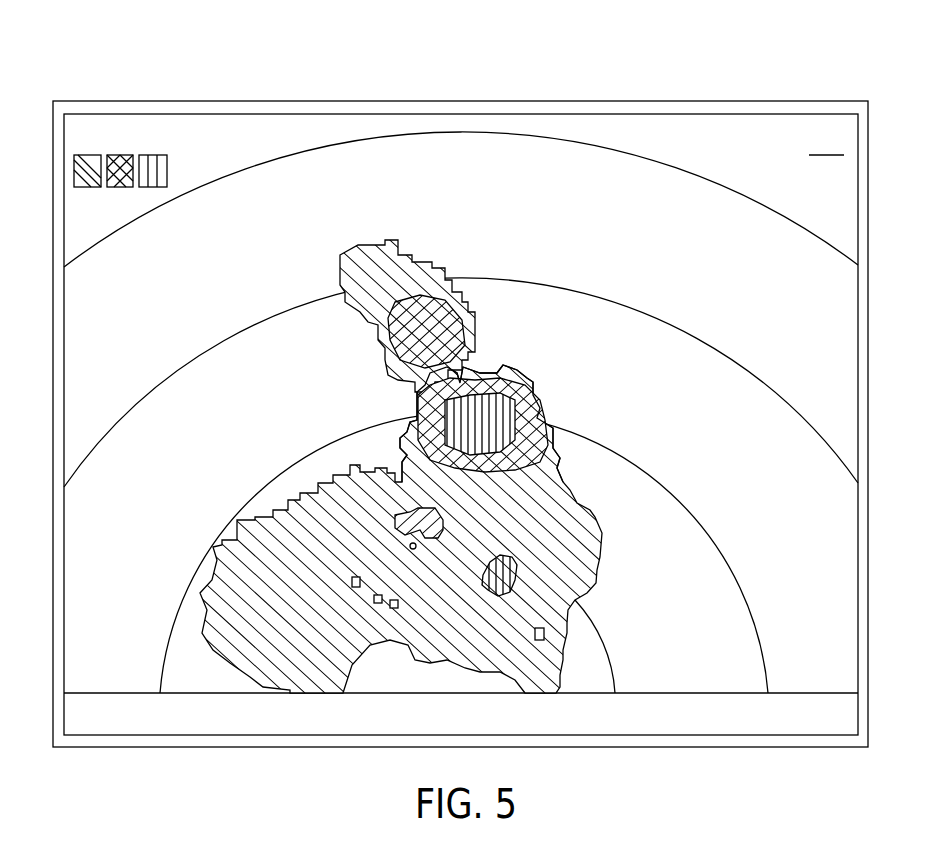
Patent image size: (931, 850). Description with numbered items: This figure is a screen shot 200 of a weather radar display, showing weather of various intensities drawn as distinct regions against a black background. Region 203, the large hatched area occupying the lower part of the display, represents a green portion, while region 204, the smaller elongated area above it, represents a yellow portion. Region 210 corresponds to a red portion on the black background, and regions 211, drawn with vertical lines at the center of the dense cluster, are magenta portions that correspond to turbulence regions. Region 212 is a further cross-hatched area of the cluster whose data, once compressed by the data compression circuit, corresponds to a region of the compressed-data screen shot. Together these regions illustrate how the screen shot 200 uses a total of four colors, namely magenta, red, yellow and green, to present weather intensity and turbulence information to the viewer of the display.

The screen shot 200 is at (328, 70).
The region 203 is at (215, 580).
The region 204 is at (468, 307).
The region 210 is at (412, 423).
The regions 211 is at (530, 411).
The region 212 is at (512, 362).